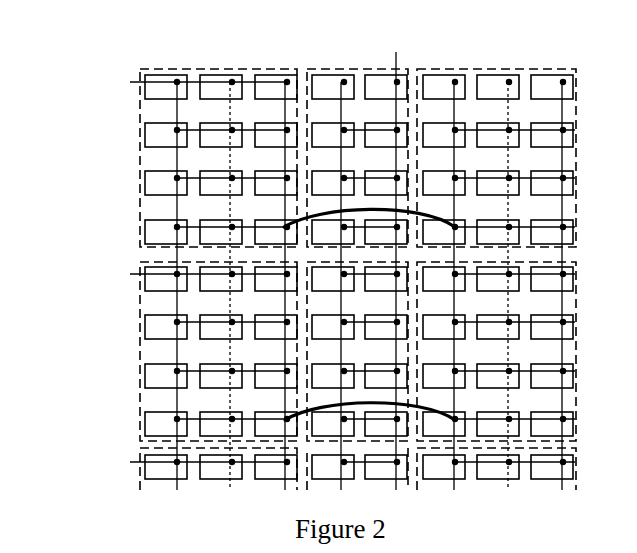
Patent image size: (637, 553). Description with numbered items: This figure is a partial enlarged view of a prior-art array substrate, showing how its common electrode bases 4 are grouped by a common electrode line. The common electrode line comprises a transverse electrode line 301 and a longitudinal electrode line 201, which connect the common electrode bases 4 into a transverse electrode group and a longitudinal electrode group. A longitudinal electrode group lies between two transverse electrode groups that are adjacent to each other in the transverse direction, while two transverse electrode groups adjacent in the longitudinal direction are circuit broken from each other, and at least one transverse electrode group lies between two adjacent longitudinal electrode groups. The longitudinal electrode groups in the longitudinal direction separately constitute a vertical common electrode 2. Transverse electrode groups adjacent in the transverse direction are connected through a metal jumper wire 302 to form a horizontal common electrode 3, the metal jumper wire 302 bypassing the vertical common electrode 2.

The vertical common electrode 2 is at (368, 48).
The horizontal common electrode 3 is at (113, 148).
The common electrode base 4 is at (341, 245).
The longitudinal electrode line 201 is at (396, 52).
The transverse electrode line 301 is at (130, 82).
The metal jumper wire 302 is at (318, 211).